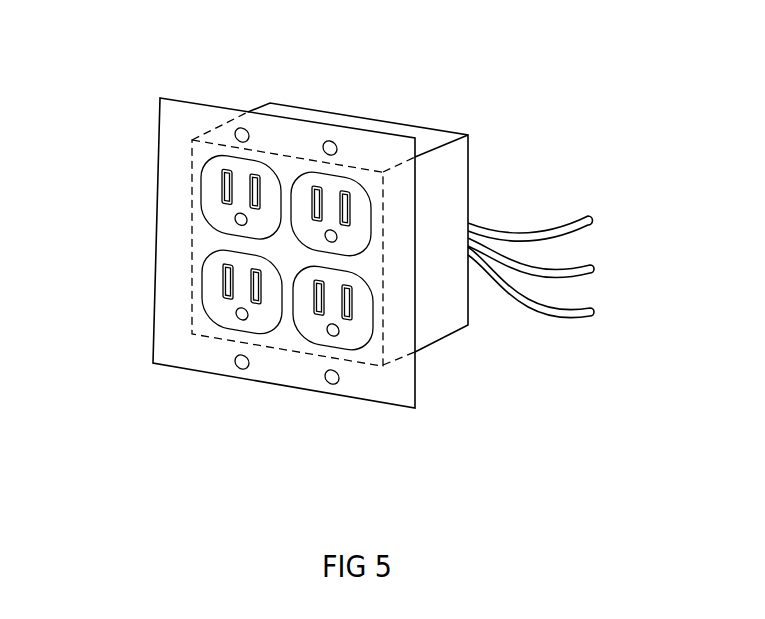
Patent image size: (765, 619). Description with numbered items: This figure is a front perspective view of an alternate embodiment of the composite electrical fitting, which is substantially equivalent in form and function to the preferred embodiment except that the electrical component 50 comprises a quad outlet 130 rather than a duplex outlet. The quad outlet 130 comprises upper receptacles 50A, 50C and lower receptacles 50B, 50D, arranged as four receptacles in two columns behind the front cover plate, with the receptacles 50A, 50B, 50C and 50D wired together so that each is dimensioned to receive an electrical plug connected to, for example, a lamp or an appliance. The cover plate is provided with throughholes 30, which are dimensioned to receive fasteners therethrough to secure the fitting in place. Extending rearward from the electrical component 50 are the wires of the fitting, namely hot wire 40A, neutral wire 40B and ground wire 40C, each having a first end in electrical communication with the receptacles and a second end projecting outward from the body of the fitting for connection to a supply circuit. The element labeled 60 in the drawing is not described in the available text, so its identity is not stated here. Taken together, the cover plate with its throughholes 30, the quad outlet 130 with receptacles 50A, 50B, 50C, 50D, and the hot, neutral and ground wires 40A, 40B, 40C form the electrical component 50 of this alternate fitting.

The throughhole 30 is at (330, 384).
The hot wire 40A is at (573, 216).
The neutral wire 40B is at (577, 263).
The ground wire 40C is at (577, 308).
The electrical component 50 is at (452, 185).
The upper receptacle 50A is at (220, 215).
The lower receptacle 50B is at (213, 303).
The upper receptacle 50C is at (310, 177).
The lower receptacle 50D is at (353, 333).
The cover plate 60 is at (183, 350).
The quad outlet 130 is at (448, 163).